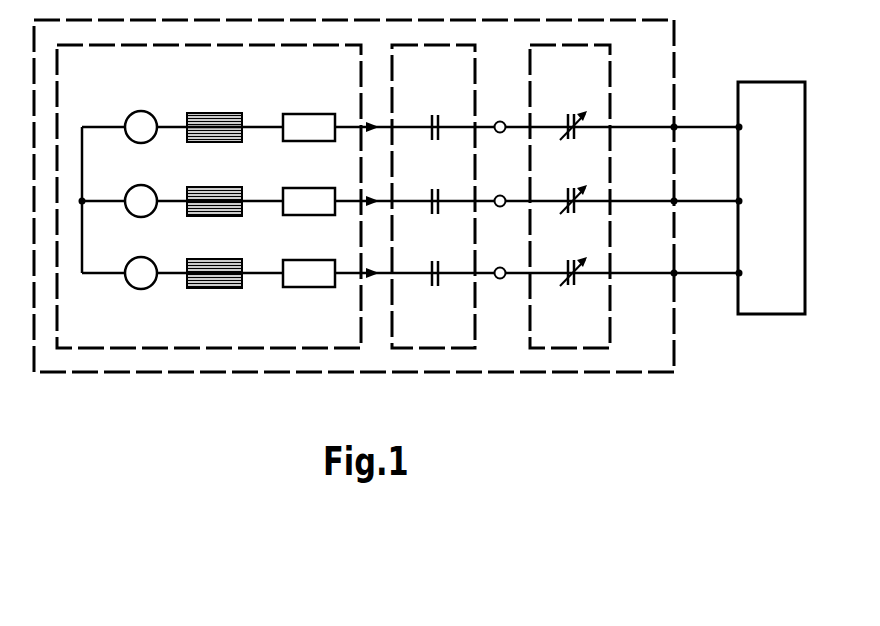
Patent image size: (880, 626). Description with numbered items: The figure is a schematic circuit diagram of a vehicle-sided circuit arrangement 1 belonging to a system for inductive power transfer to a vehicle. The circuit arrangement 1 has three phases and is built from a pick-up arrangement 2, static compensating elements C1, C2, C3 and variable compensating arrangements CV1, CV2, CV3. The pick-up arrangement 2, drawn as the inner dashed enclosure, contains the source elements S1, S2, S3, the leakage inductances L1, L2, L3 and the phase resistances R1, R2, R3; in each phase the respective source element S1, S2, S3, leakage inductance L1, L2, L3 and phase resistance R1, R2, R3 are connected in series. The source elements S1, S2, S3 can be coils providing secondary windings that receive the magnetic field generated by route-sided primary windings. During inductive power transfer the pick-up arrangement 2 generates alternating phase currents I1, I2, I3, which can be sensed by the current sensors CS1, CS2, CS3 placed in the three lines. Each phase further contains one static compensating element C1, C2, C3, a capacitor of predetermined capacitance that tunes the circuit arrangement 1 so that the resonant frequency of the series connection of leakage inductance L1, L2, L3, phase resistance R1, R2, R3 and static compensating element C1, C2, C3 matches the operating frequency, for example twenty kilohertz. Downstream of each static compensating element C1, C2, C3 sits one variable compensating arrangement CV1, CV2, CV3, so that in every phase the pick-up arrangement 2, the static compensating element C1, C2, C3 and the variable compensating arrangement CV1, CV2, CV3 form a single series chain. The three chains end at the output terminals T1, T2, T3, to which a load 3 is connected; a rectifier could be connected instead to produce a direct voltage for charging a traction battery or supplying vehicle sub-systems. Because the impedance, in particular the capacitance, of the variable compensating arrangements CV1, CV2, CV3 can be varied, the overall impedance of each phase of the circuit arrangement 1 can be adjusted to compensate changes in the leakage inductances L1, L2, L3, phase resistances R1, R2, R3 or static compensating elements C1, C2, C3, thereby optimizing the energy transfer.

The vehicle-sided circuit arrangement 1 is at (148, 373).
The pick-up arrangement 2 is at (243, 350).
The load 3 is at (766, 316).
The source element S1 is at (141, 112).
The source element S2 is at (141, 186).
The source element S3 is at (141, 258).
The leakage inductance L1 is at (214, 111).
The leakage inductance L2 is at (214, 185).
The leakage inductance L3 is at (214, 257).
The phase resistance R1 is at (309, 111).
The phase resistance R2 is at (309, 185).
The phase resistance R3 is at (309, 257).
The phase current I1 is at (371, 106).
The phase current I2 is at (371, 180).
The phase current I3 is at (371, 252).
The static compensating element C1 is at (436, 111).
The static compensating element C2 is at (436, 185).
The static compensating element C3 is at (436, 257).
The current sensor CS1 is at (503, 109).
The current sensor CS2 is at (503, 183).
The current sensor CS3 is at (503, 255).
The variable compensating arrangement CV1 is at (568, 111).
The variable compensating arrangement CV2 is at (568, 185).
The variable compensating arrangement CV3 is at (568, 257).
The output terminal T1 is at (689, 108).
The output terminal T2 is at (689, 182).
The output terminal T3 is at (689, 254).